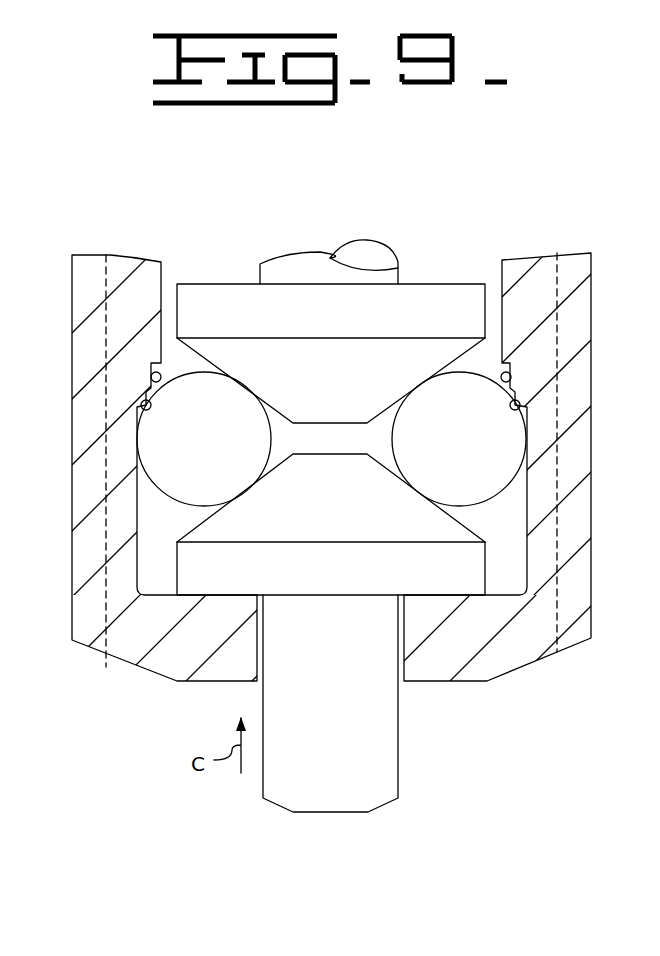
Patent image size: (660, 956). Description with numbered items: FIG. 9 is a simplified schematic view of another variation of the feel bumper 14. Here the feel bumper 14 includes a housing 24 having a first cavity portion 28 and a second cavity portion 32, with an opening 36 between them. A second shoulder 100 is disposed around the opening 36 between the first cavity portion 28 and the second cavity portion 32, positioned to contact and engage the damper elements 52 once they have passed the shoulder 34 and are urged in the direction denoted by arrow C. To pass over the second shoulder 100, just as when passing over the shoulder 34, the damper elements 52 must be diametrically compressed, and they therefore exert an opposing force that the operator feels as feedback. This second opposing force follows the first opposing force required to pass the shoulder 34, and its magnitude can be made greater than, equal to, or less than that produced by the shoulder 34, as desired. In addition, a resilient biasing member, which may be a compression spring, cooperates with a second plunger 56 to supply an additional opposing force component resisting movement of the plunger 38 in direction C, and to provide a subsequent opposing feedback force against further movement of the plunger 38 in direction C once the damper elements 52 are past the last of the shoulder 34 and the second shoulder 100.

The feel bumper 14 is at (572, 652).
The housing 24 is at (150, 673).
The first cavity portion 28 is at (510, 555).
The second cavity portion 32 is at (493, 318).
The shoulder 34 is at (527, 408).
The opening 36 is at (160, 368).
The plunger 38 is at (398, 800).
The damper elements 52 is at (160, 490).
The second plunger 56 is at (437, 282).
The second shoulder 100 is at (513, 382).